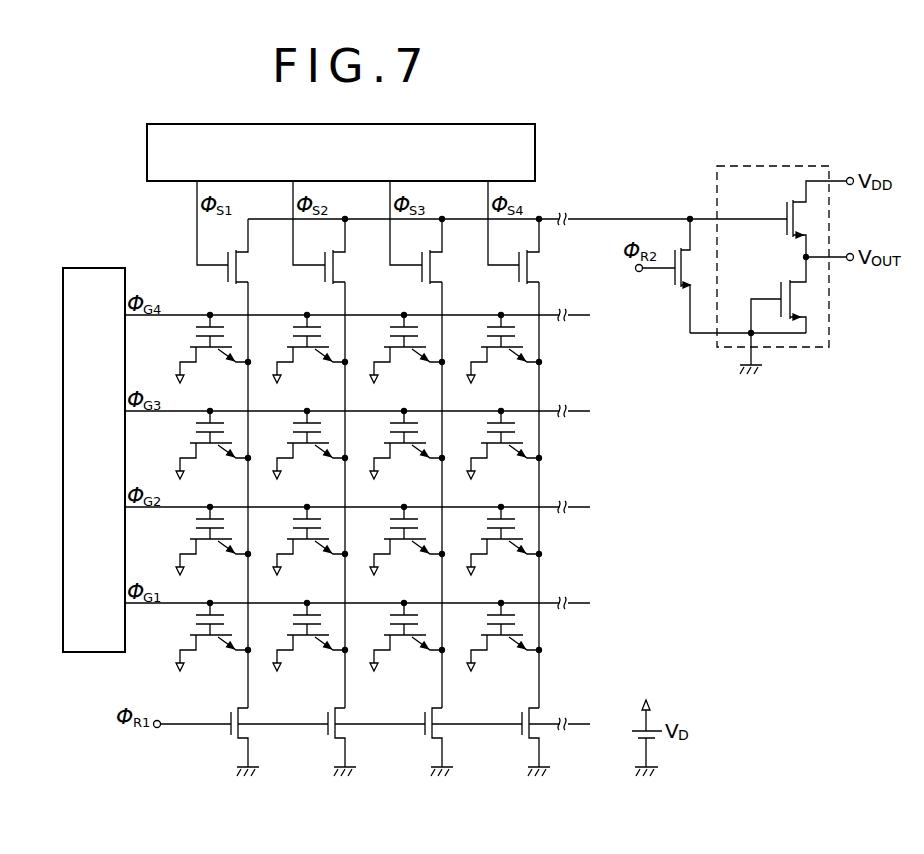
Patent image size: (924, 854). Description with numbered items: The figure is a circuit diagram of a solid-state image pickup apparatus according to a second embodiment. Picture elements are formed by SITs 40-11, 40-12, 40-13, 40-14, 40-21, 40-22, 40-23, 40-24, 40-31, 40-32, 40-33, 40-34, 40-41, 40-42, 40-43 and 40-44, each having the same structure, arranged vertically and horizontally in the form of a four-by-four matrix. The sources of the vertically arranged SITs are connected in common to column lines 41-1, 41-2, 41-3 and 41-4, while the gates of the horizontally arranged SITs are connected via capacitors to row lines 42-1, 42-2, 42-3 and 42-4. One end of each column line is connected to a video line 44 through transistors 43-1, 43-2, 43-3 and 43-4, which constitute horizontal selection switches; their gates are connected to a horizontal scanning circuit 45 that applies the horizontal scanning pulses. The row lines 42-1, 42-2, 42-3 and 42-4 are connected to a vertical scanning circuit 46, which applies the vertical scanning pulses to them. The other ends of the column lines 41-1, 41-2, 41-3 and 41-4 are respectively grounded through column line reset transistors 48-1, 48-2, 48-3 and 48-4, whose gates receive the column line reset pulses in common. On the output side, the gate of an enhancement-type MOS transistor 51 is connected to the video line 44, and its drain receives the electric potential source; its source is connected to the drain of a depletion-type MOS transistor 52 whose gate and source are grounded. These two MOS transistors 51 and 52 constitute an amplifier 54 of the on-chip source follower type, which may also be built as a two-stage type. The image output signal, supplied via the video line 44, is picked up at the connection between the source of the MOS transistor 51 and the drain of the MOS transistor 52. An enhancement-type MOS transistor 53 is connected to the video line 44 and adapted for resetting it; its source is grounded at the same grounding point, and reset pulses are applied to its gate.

The horizontal scanning circuit 45 is at (536, 150).
The vertical scanning circuit 46 is at (100, 267).
The video line 44 is at (581, 215).
The amplifier 54 is at (738, 165).
The enhancement-type MOS transistor 51 is at (788, 199).
The depletion-type MOS transistor 52 is at (802, 297).
The enhancement-type MOS transistor 53 is at (673, 292).
The transistor 43-1 is at (271, 260).
The transistor 43-2 is at (368, 260).
The transistor 43-3 is at (465, 260).
The transistor 43-4 is at (562, 260).
The column line 41-1 is at (251, 294).
The column line 41-2 is at (348, 294).
The column line 41-3 is at (445, 294).
The column line 41-4 is at (542, 294).
The row line 42-1 is at (170, 601).
The row line 42-2 is at (170, 505).
The row line 42-3 is at (170, 409).
The row line 42-4 is at (196, 312).
The SIT 40-11 is at (213, 643).
The SIT 40-12 is at (310, 643).
The SIT 40-13 is at (407, 643).
The SIT 40-14 is at (504, 643).
The SIT 40-21 is at (213, 547).
The SIT 40-22 is at (310, 547).
The SIT 40-23 is at (407, 547).
The SIT 40-24 is at (504, 547).
The SIT 40-31 is at (213, 451).
The SIT 40-32 is at (310, 451).
The SIT 40-33 is at (407, 451).
The SIT 40-34 is at (504, 451).
The SIT 40-41 is at (213, 355).
The SIT 40-42 is at (310, 355).
The SIT 40-43 is at (407, 355).
The SIT 40-44 is at (504, 355).
The column line reset transistor 48-1 is at (229, 734).
The column line reset transistor 48-2 is at (326, 734).
The column line reset transistor 48-3 is at (423, 734).
The column line reset transistor 48-4 is at (520, 734).